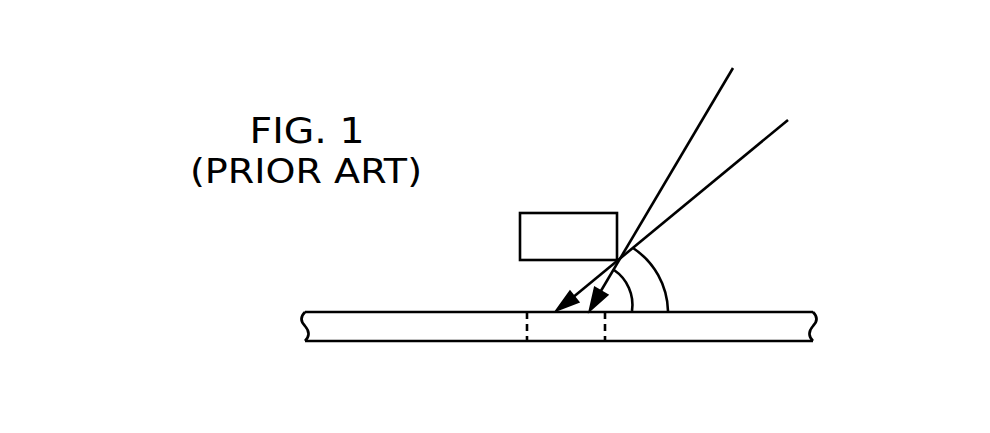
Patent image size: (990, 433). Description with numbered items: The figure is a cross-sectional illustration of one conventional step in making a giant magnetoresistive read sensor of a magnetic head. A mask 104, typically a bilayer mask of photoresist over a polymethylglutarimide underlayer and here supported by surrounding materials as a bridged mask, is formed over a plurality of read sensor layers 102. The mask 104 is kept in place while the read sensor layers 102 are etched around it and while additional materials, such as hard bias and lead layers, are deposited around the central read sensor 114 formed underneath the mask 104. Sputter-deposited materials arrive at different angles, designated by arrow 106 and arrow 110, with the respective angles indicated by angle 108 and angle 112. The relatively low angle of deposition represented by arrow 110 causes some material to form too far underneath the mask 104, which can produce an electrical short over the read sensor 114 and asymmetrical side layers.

The read sensor layers 102 is at (753, 311).
The mask 104 is at (543, 213).
The arrow 106 is at (713, 98).
The first implant angle 108 is at (627, 292).
The arrow 110 is at (763, 140).
The second implant angle 112 is at (655, 256).
The read sensor 114 is at (560, 328).